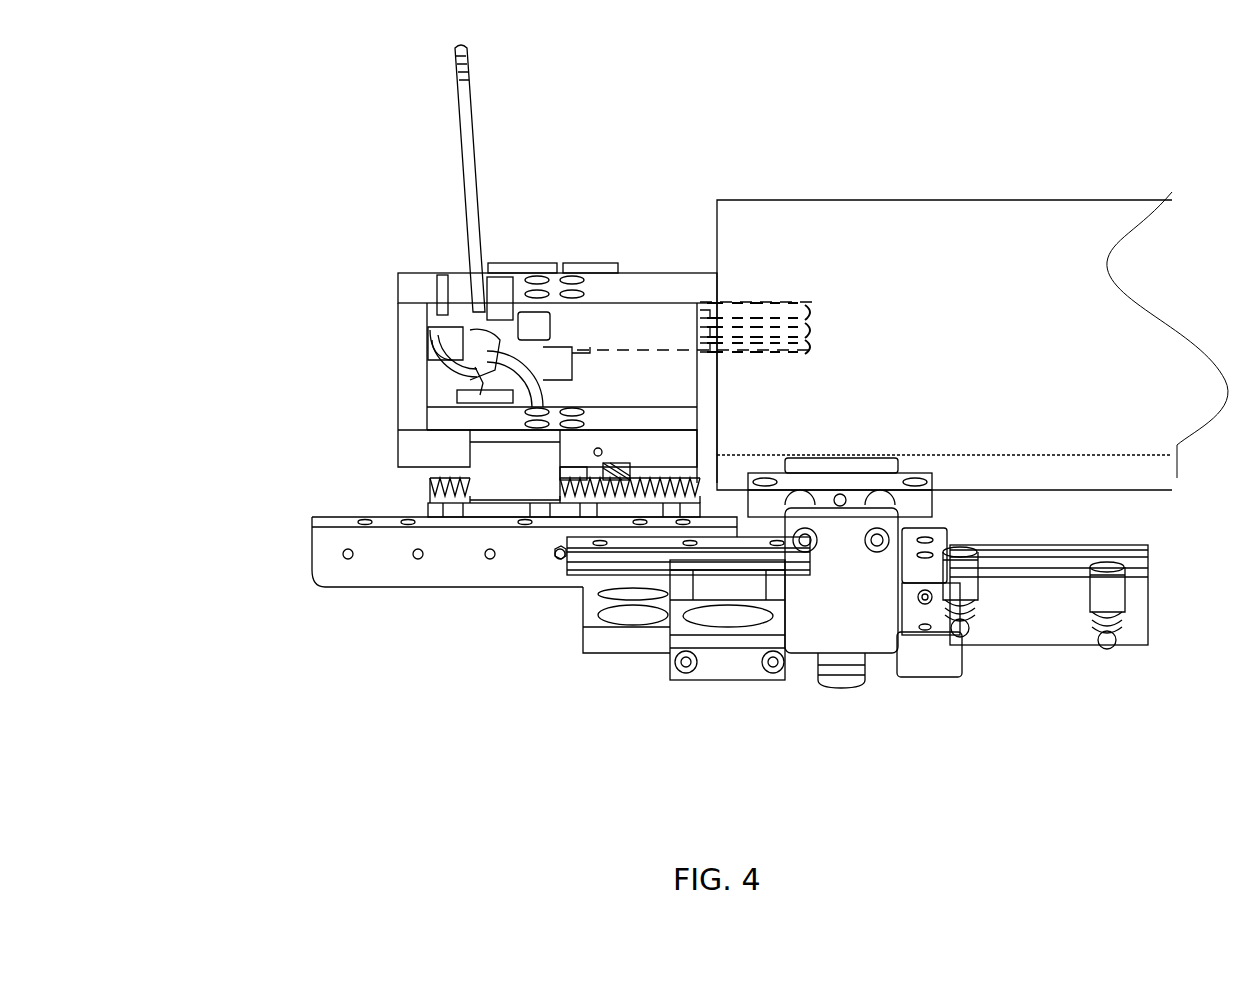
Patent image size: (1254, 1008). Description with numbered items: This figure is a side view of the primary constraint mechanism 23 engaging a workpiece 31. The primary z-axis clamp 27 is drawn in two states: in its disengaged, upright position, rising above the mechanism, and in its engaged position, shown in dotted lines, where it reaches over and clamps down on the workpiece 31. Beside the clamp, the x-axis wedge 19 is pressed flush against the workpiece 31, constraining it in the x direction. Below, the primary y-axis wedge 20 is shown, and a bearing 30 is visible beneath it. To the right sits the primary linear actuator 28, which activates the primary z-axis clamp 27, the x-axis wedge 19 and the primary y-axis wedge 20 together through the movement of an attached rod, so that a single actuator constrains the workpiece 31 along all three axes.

The x-axis wedge 19 is at (652, 255).
The primary y-axis wedge 20 is at (662, 717).
The primary constraint mechanism 23 is at (180, 310).
The primary z-axis clamp 27 is at (383, 480).
The primary linear actuator 28 is at (1073, 668).
The bearing 30 is at (815, 692).
The workpiece 31 is at (928, 232).